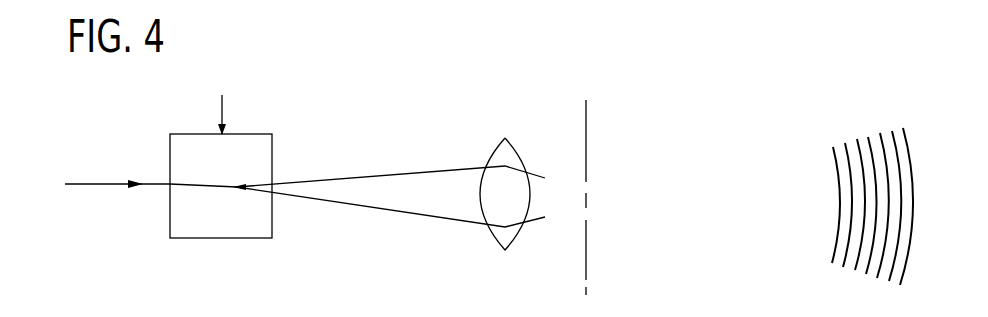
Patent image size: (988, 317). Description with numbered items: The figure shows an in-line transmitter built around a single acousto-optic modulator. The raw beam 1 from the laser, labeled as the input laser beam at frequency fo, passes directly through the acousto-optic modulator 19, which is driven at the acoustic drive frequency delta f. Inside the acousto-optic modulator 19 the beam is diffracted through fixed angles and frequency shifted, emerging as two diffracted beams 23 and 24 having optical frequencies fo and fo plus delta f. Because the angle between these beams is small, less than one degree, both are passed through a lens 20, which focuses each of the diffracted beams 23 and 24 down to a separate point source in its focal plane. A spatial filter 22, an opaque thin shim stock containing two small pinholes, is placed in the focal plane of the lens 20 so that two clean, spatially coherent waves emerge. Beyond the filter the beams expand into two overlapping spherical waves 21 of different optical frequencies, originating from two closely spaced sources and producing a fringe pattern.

The raw beam 1 is at (82, 182).
The acousto-optic modulator 19 is at (245, 135).
The lens 20 is at (490, 157).
The overlapping spherical waves 21 is at (908, 150).
The spatial filter 22 is at (590, 278).
The diffracted beam 23 is at (426, 170).
The diffracted beam 24 is at (430, 217).